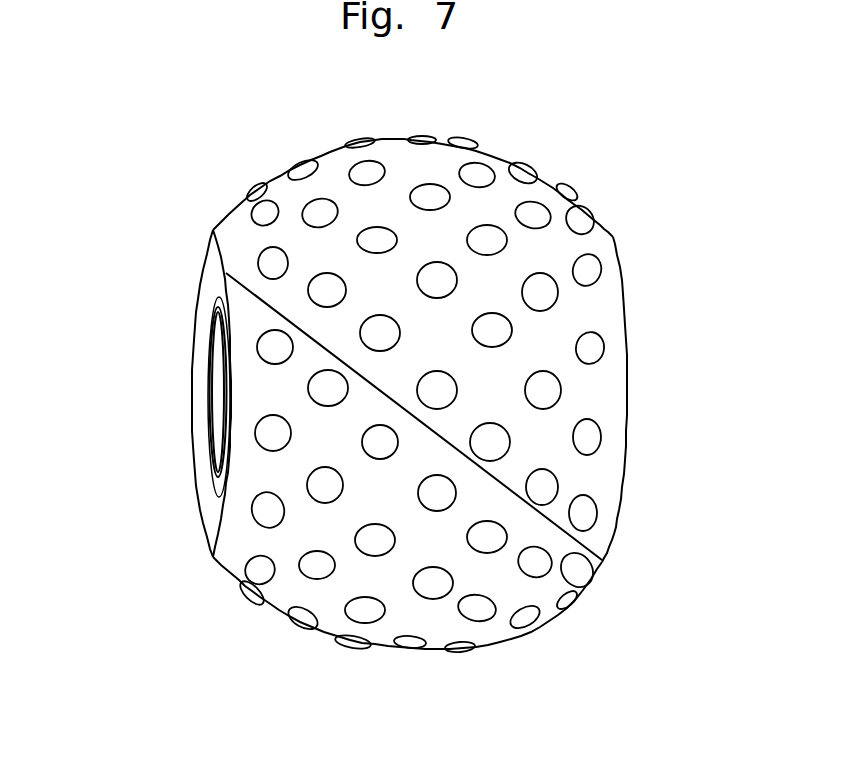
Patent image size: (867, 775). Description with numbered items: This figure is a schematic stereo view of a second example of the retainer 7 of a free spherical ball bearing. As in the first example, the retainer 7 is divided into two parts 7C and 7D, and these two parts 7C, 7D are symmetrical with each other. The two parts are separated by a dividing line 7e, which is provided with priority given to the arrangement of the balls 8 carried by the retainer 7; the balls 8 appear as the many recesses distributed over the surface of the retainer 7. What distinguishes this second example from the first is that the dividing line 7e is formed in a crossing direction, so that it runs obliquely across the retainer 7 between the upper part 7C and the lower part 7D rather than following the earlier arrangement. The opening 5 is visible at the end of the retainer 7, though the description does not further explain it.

The retainer 7 is at (130, 244).
The part of the retainer 7C is at (287, 195).
The part of the retainer 7D is at (287, 595).
The dividing line 7e is at (218, 500).
The slot (shaft opening) in end face 5 is at (218, 362).
The balls 8 is at (600, 267).